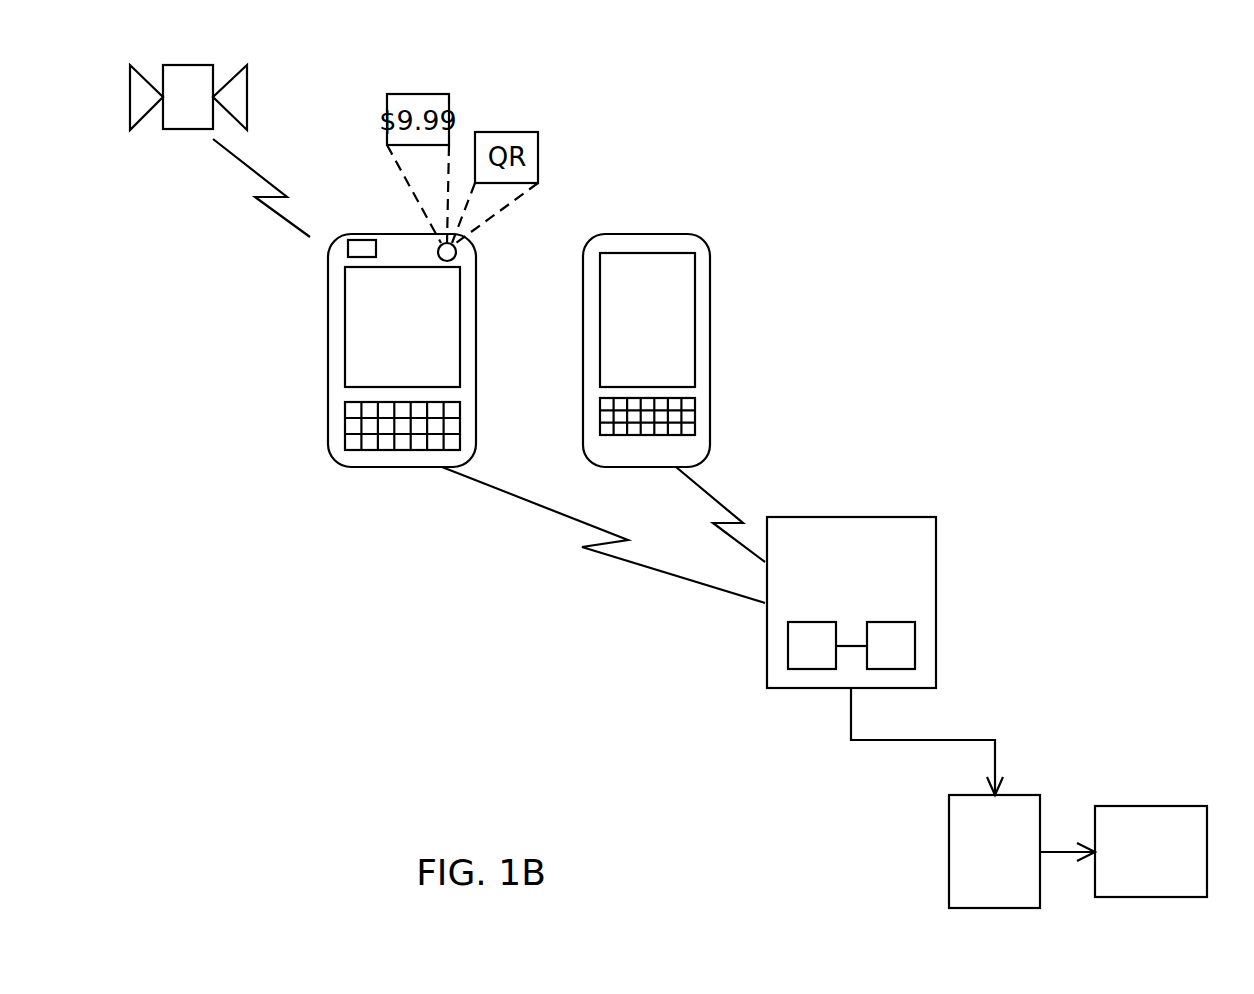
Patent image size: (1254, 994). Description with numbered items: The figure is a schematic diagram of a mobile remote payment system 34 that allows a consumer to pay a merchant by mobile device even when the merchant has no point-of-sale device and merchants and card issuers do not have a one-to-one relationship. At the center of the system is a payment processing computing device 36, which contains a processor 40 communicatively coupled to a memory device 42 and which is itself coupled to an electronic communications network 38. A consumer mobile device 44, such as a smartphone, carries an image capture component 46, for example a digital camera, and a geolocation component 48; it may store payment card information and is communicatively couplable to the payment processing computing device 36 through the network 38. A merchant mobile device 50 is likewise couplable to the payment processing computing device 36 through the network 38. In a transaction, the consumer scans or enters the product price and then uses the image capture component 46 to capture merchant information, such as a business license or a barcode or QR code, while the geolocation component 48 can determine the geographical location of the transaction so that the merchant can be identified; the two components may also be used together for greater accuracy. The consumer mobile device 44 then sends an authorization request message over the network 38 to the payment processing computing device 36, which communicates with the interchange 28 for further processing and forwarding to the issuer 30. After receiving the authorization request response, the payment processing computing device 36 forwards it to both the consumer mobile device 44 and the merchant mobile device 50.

The interchange 28 is at (977, 864).
The issuer 30 is at (1135, 864).
The mobile remote payment system 34 is at (909, 248).
The payment processing computing device 36 is at (936, 543).
The electronic communications network 38 is at (613, 587).
The processor 40 is at (788, 645).
The memory device 42 is at (915, 646).
The consumer mobile device 44 is at (328, 333).
The image capture component 46 is at (452, 251).
The geolocation component 48 is at (359, 243).
The merchant mobile device 50 is at (710, 309).